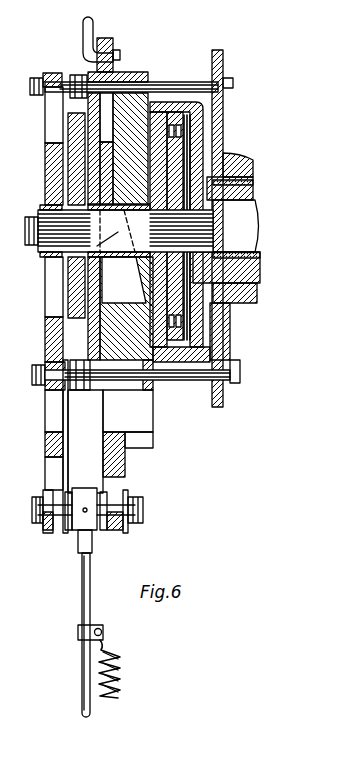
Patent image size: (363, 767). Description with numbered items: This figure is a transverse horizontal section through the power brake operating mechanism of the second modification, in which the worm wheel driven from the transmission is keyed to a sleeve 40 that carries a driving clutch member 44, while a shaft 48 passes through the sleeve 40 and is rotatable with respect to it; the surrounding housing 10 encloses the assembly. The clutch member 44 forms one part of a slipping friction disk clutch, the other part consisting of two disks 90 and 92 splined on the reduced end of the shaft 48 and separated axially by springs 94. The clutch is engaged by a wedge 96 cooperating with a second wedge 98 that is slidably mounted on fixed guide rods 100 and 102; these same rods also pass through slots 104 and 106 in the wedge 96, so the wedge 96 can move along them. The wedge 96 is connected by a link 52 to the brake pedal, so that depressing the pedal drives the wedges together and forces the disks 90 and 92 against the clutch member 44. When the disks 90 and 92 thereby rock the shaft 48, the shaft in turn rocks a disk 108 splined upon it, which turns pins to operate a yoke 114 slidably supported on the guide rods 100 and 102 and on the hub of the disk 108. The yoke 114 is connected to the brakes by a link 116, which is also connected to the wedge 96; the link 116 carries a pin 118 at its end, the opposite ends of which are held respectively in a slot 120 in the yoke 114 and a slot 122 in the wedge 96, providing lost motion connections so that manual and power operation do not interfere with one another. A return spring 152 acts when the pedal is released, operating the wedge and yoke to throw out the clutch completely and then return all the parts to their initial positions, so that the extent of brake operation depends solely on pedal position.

The housing 10 is at (224, 323).
The sleeve 40 is at (230, 177).
The driving clutch member 44 is at (195, 114).
The shaft 48 is at (68, 254).
The link 52 is at (84, 30).
The disk 90 is at (183, 144).
The disk 92 is at (158, 108).
The springs 94 is at (168, 122).
The wedge 96 is at (107, 160).
The wedge 98 is at (135, 112).
The guide rod 100 is at (120, 95).
The guide rod 102 is at (130, 376).
The slot 104 is at (107, 108).
The slot 106 is at (123, 413).
The disk 108 is at (56, 313).
The yoke 114 is at (50, 320).
The link 116 is at (85, 585).
The pin 118 is at (55, 530).
The slot 120 is at (58, 468).
The slot 122 is at (113, 485).
The return spring 152 is at (117, 667).